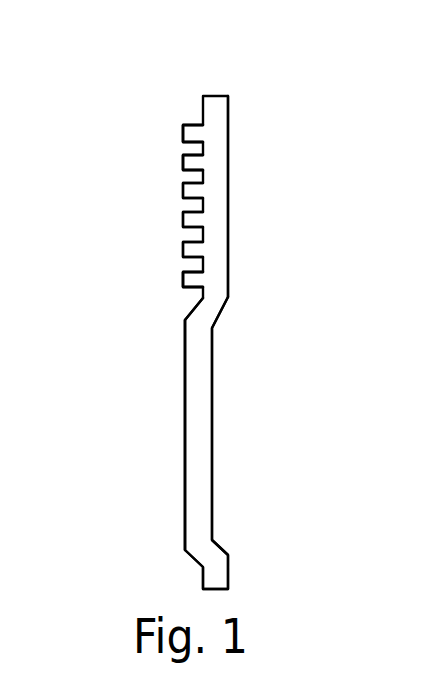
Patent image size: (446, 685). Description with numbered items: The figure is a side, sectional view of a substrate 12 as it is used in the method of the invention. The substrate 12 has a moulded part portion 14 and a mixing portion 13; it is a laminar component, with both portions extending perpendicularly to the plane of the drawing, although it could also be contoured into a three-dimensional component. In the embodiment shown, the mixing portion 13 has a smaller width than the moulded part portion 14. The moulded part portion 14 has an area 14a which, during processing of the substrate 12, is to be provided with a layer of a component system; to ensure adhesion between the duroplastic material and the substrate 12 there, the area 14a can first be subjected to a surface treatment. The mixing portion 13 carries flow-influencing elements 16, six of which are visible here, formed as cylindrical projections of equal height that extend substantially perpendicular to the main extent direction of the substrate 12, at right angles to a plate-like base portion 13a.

The substrate 12 is at (271, 91).
The mixing portion 13 is at (168, 201).
The plate-like base portion 13a is at (212, 177).
The moulded part portion 14 is at (170, 482).
The area 14a is at (185, 411).
The flow-influencing elements 16 is at (195, 133).